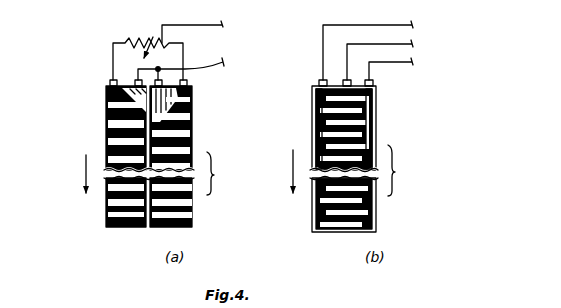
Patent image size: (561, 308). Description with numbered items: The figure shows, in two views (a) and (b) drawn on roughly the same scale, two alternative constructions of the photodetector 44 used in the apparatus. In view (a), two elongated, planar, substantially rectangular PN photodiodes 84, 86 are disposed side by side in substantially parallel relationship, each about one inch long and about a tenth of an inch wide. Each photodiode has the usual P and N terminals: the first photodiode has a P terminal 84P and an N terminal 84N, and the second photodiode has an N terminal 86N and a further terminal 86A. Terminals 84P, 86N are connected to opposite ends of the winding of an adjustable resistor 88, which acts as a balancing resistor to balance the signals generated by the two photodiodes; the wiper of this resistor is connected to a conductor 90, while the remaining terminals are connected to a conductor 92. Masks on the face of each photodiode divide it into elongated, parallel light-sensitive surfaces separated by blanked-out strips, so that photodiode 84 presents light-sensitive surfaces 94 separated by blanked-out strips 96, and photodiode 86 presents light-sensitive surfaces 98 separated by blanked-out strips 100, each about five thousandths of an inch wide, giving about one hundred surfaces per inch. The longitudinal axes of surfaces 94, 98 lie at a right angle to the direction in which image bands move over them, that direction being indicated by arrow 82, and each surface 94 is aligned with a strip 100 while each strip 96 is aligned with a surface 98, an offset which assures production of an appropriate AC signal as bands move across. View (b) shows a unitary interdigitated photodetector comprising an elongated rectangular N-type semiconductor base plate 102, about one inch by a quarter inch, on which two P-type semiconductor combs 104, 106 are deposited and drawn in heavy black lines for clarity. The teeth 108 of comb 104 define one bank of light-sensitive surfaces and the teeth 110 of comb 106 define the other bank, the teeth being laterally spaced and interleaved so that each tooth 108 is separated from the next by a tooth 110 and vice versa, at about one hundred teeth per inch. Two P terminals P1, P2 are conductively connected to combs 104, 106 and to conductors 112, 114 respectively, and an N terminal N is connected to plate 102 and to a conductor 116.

The photodetector 44 is at (110, 239).
The arrow 82 is at (84, 178).
The PN photodiode 84 is at (107, 111).
The P terminal 84P is at (110, 83).
The N terminal 84N is at (136, 82).
The PN photodiode 86 is at (192, 108).
The terminal of second battery 86A is at (160, 81).
The N terminal 86N is at (190, 84).
The adjustable resistor 88 is at (146, 32).
The conductor 90 is at (187, 25).
The conductor 92 is at (193, 69).
The light-sensitive surfaces 94 is at (107, 141).
The blanked-out strips 96 is at (106, 221).
The light-sensitive surfaces 98 is at (192, 117).
The blanked-out strips 100 is at (192, 208).
The semiconductor base plate 102 is at (378, 213).
The P-type semiconductor comb 104 is at (309, 218).
The P-type semiconductor comb 106 is at (382, 208).
The teeth 108 is at (315, 113).
The teeth 110 is at (362, 106).
The conductor 112 is at (366, 26).
The conductor 114 is at (376, 45).
The conductor 116 is at (378, 63).
The P terminal P1 is at (318, 82).
The P terminal P2 is at (344, 82).
The N terminal N is at (371, 85).